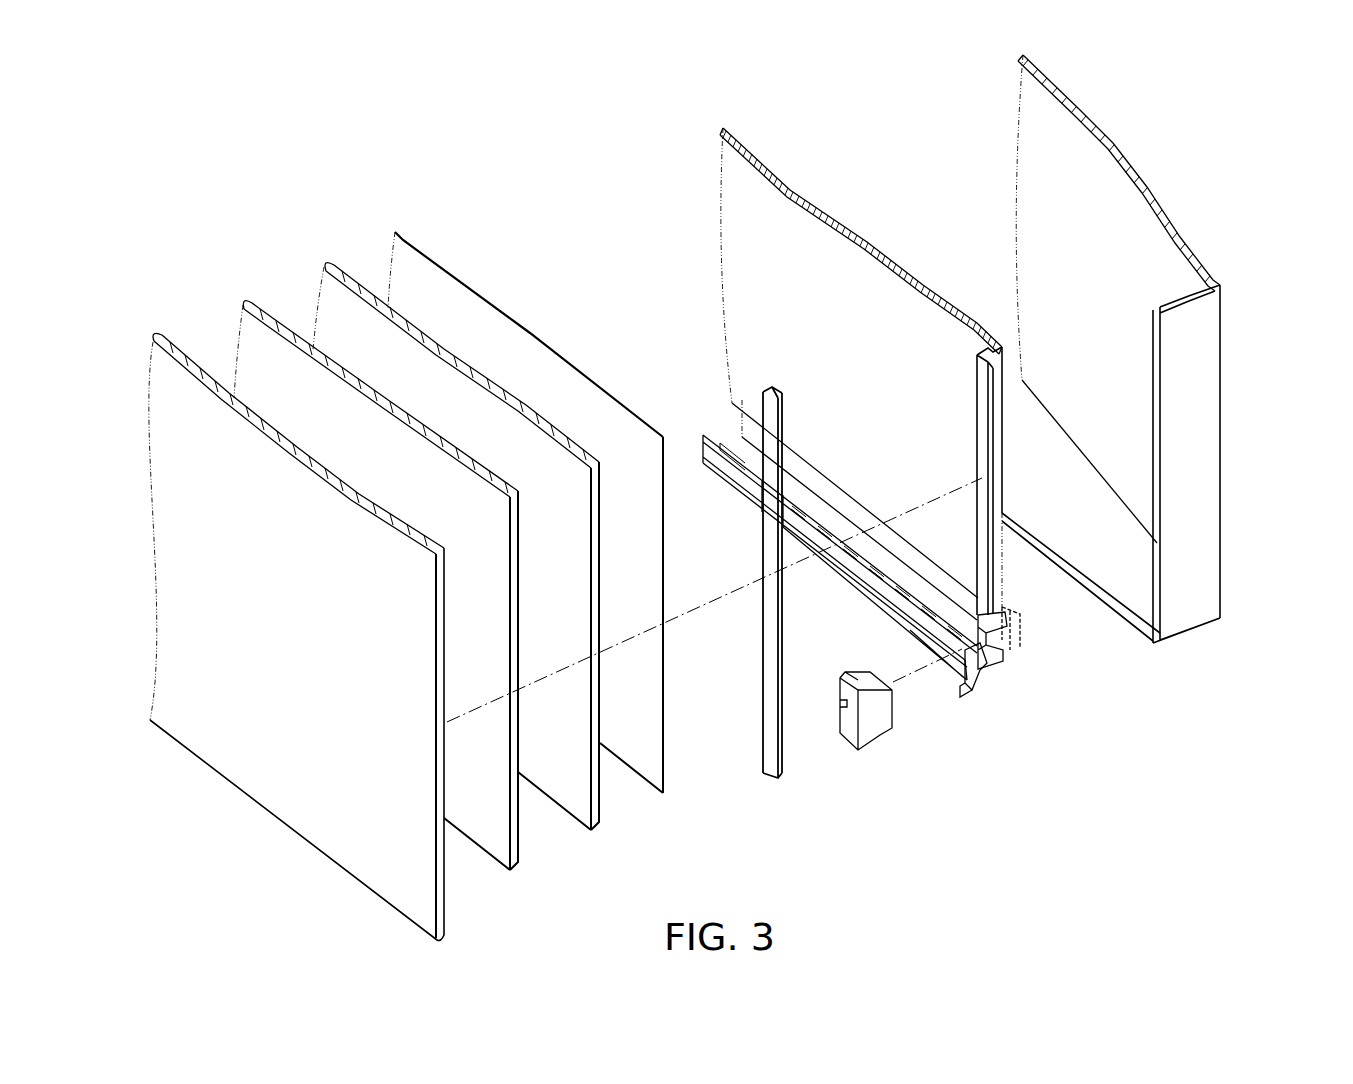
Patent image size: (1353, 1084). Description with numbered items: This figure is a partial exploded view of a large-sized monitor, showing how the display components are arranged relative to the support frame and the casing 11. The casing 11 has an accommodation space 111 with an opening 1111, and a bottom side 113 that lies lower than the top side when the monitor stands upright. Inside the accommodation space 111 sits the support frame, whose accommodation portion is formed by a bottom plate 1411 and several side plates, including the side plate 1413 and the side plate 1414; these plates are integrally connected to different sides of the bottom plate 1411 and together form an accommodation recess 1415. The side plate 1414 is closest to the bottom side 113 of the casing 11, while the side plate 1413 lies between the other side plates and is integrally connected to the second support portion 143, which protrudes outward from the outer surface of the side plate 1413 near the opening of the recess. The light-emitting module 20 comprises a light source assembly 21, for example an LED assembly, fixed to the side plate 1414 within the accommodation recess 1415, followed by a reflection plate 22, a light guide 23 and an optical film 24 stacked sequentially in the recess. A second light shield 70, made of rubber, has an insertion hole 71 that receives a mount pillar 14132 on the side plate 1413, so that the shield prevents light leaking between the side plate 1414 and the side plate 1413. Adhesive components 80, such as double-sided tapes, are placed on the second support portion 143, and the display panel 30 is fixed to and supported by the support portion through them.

The casing 11 is at (1158, 377).
The accommodation space 111 is at (1135, 474).
The opening 1111 is at (1149, 400).
The bottom side 113 is at (1133, 630).
The light-emitting module 20 is at (433, 519).
The light source assembly 21 is at (737, 440).
The reflection plate 22 is at (395, 238).
The light guide 23 is at (323, 264).
The optical film 24 is at (242, 303).
The display panel 30 is at (152, 349).
The second light shield 70 is at (869, 736).
The insertion hole 71 is at (838, 705).
The adhesive components 80 is at (763, 700).
The second support portion 143 is at (980, 410).
The bottom plate 1411 is at (868, 240).
The side plate 1413 is at (1000, 570).
The mount pillar 14132 is at (1013, 657).
The side plate 1414 is at (992, 673).
The accommodation recess 1415 is at (820, 374).